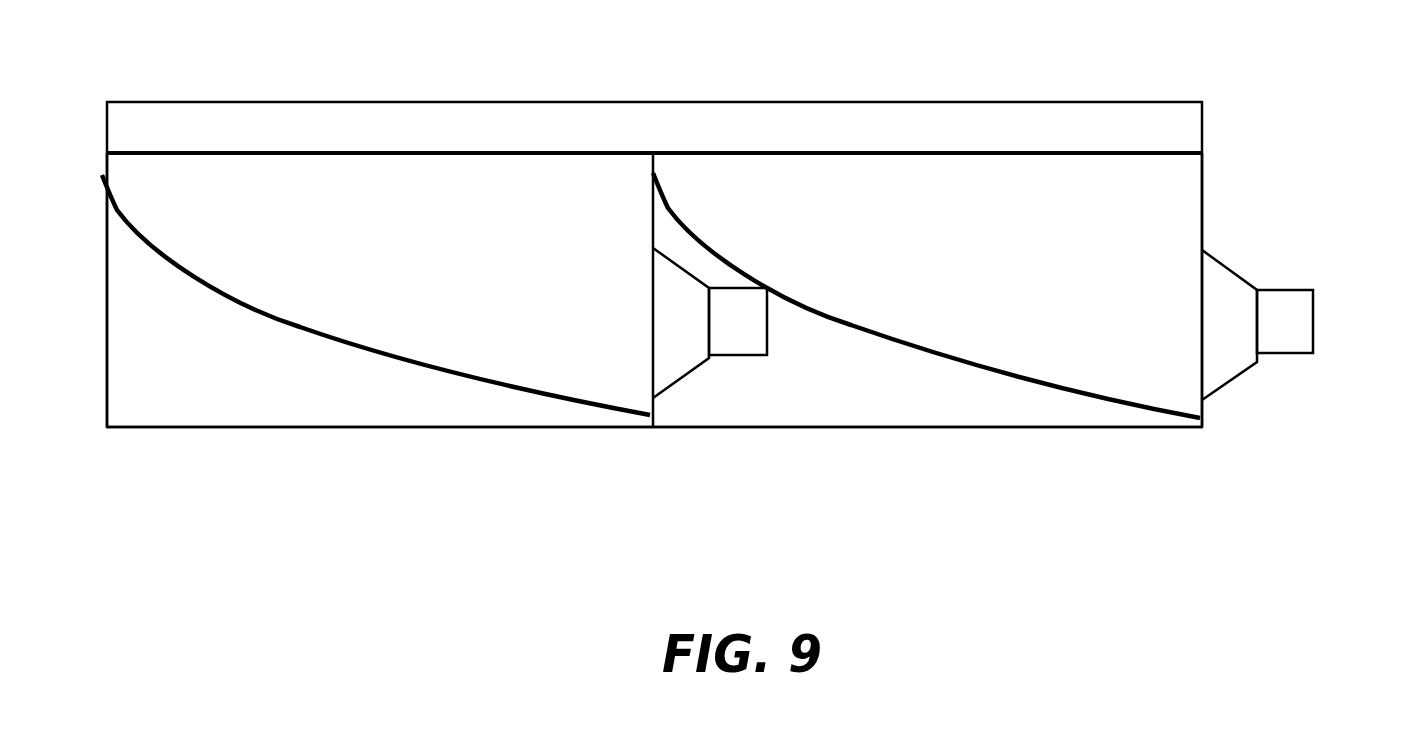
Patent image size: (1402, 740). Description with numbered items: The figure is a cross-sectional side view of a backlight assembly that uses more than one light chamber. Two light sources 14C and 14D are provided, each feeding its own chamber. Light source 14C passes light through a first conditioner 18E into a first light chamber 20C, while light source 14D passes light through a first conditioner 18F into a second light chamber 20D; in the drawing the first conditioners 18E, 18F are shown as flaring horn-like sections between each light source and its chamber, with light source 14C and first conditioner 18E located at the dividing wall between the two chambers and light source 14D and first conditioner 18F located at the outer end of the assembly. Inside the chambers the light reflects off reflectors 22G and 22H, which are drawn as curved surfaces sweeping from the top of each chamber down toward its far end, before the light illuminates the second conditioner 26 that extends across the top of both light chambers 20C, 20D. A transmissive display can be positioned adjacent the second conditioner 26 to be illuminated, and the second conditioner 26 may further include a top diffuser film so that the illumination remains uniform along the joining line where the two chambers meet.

The second conditioner 26 is at (1202, 122).
The light chamber 20C is at (267, 427).
The light chamber 20D is at (915, 427).
The reflector 22G is at (378, 355).
The reflector 22H is at (968, 368).
The first conditioner 18E is at (680, 375).
The first conditioner 18F is at (1227, 263).
The light source 14C is at (728, 355).
The light source 14D is at (1288, 353).